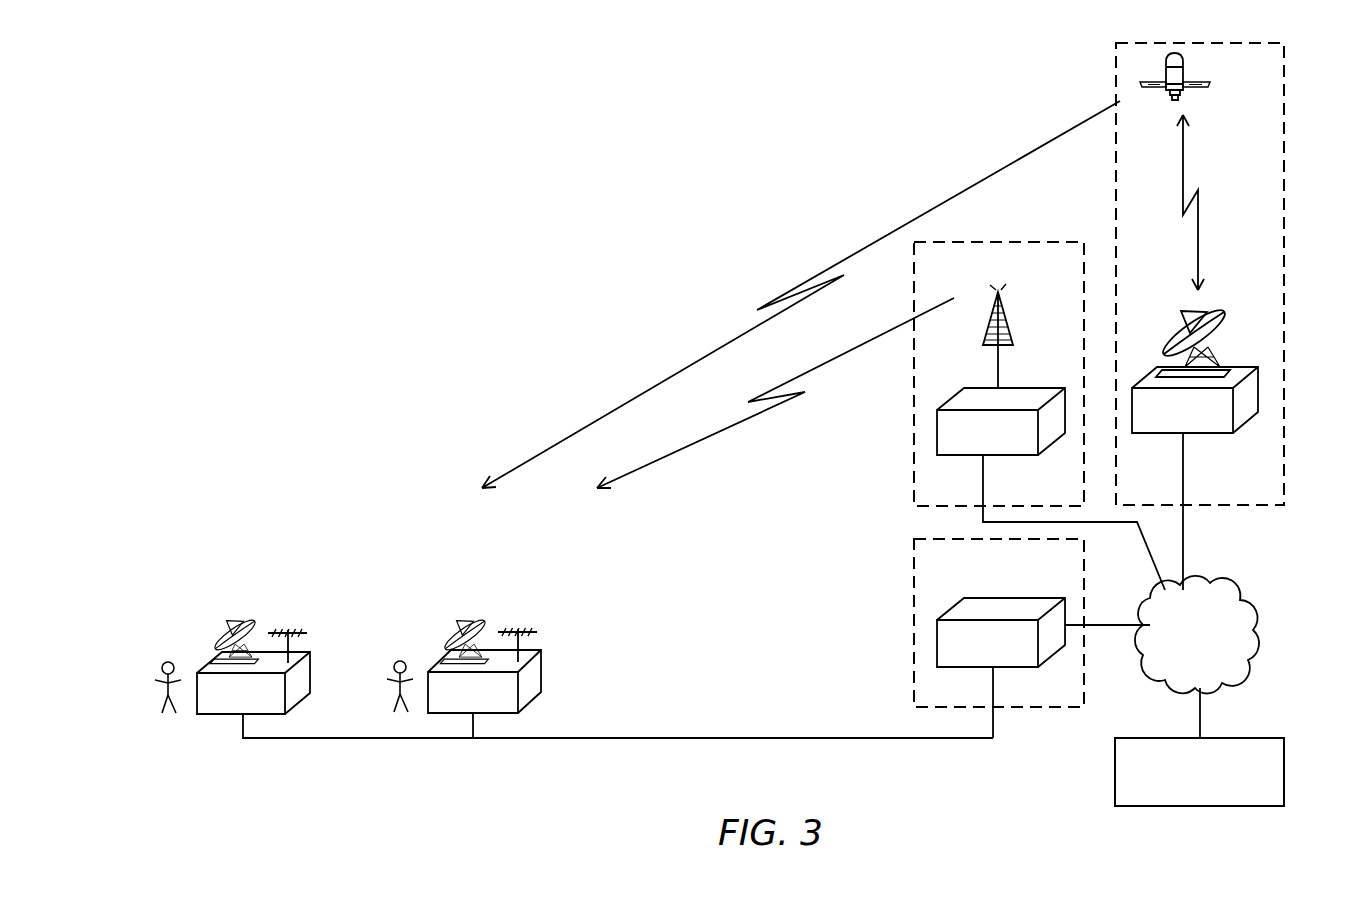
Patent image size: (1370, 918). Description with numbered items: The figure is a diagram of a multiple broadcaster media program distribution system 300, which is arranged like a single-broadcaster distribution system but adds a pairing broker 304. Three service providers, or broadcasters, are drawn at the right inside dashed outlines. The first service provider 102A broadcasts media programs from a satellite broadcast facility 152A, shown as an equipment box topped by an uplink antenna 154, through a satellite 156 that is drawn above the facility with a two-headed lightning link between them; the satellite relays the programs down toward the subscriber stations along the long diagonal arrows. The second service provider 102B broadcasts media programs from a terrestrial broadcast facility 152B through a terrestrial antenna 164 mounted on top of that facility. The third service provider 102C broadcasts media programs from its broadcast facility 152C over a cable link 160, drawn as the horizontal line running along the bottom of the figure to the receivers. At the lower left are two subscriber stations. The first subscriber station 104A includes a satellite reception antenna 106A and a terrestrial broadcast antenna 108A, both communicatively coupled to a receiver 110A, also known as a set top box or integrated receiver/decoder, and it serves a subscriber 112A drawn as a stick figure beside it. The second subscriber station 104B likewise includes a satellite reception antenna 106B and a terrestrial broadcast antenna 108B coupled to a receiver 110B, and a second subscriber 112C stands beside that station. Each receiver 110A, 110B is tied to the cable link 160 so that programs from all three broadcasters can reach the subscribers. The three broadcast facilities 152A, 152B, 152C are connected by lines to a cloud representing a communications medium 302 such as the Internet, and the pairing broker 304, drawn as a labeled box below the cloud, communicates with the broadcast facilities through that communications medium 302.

The multiple broadcaster media program distribution system 300 is at (416, 304).
The satellite 156 is at (1185, 62).
The gateway antenna 154 is at (1237, 318).
The first service provider 102A is at (1286, 352).
The satellite broadcast facility 152A is at (1200, 436).
The terrestrial antenna 164 is at (1015, 327).
The terrestrial broadcast facility 152B is at (962, 396).
The second service provider 102B is at (914, 483).
The broadcast facility 152C is at (983, 600).
The third service provider 102C is at (914, 627).
The communications medium 302 is at (1213, 585).
The pairing broker 304 is at (1115, 775).
The cable link 160 is at (678, 738).
The subscriber station 104A is at (192, 612).
The satellite reception antenna 106A is at (231, 622).
The terrestrial broadcast antenna 108A is at (292, 632).
The subscriber 112A is at (162, 660).
The receiver 110A is at (300, 698).
The satellite reception antenna 106B is at (458, 624).
The terrestrial broadcast antenna 108B is at (522, 633).
The subscriber station 104B is at (573, 631).
The user 112C is at (393, 663).
The receiver 110B is at (530, 697).